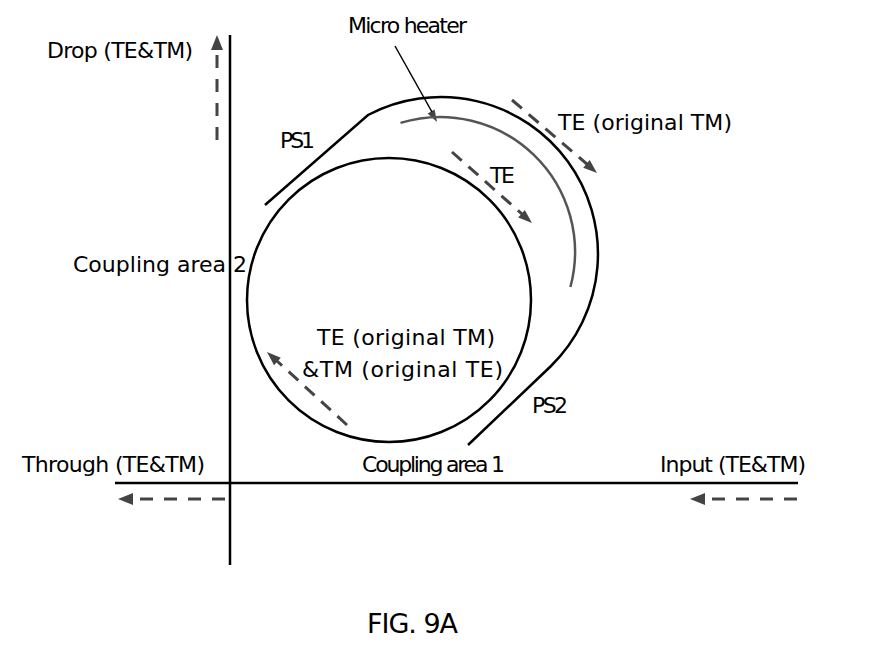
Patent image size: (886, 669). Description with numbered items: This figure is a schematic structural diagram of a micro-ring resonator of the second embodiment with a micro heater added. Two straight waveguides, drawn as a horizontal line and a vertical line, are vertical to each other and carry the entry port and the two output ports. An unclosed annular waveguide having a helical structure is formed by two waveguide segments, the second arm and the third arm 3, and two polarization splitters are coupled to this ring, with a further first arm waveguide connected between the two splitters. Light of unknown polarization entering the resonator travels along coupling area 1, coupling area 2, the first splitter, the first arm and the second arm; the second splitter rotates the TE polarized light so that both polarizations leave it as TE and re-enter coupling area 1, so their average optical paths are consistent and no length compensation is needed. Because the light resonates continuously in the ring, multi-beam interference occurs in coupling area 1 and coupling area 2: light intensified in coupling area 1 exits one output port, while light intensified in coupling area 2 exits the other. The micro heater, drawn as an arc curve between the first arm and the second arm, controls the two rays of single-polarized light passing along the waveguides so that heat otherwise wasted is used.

The coupling area 1 is at (459, 271).
The coupling area 2 is at (389, 229).
The Arm3 3 is at (389, 376).